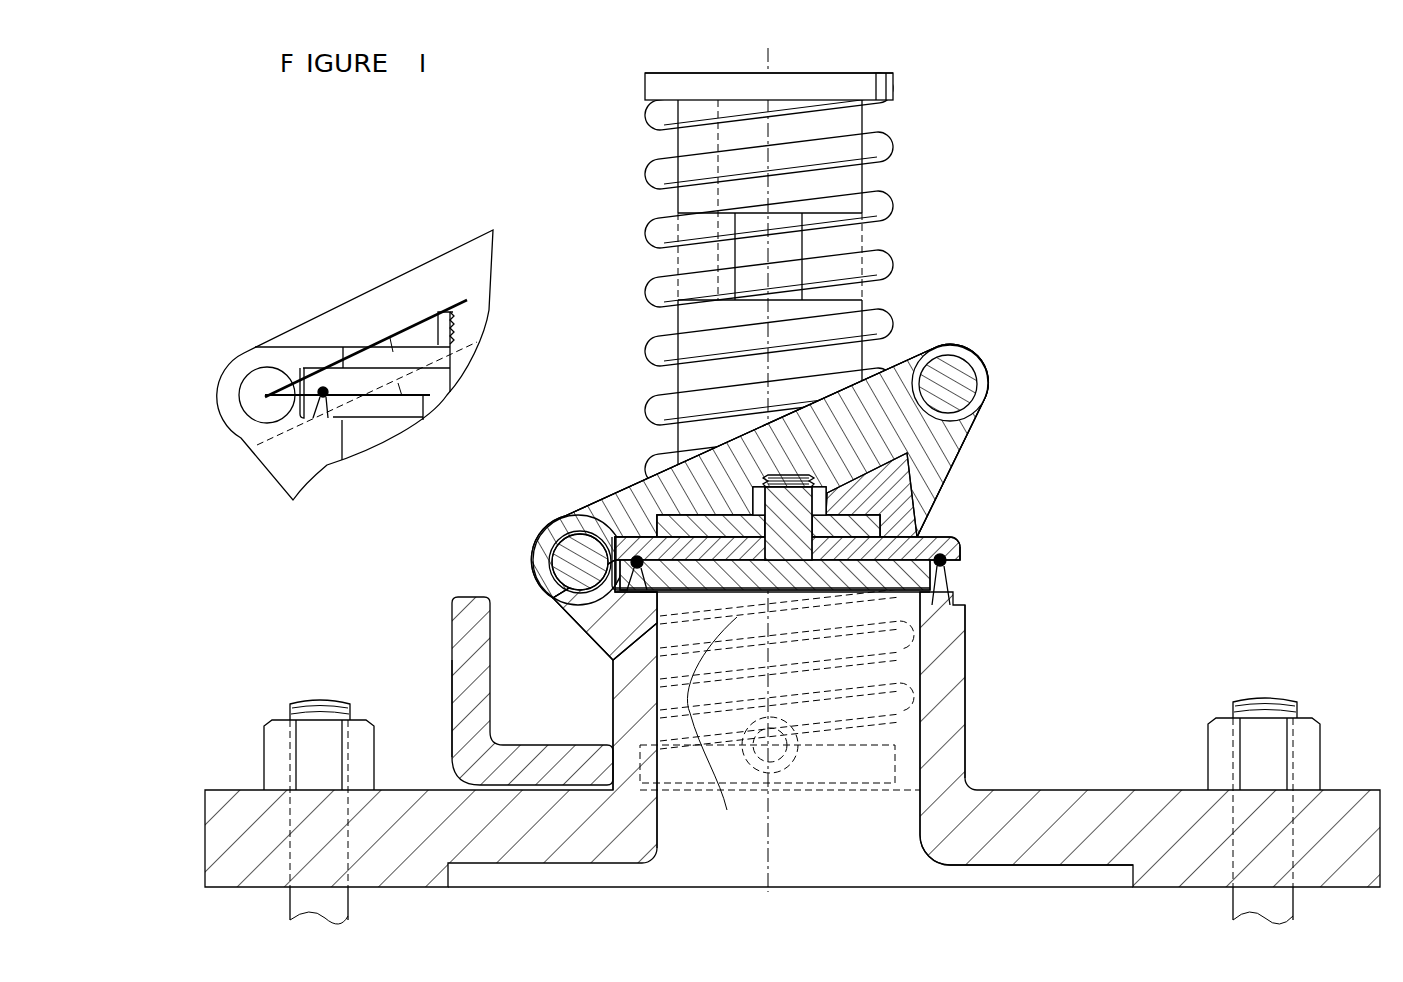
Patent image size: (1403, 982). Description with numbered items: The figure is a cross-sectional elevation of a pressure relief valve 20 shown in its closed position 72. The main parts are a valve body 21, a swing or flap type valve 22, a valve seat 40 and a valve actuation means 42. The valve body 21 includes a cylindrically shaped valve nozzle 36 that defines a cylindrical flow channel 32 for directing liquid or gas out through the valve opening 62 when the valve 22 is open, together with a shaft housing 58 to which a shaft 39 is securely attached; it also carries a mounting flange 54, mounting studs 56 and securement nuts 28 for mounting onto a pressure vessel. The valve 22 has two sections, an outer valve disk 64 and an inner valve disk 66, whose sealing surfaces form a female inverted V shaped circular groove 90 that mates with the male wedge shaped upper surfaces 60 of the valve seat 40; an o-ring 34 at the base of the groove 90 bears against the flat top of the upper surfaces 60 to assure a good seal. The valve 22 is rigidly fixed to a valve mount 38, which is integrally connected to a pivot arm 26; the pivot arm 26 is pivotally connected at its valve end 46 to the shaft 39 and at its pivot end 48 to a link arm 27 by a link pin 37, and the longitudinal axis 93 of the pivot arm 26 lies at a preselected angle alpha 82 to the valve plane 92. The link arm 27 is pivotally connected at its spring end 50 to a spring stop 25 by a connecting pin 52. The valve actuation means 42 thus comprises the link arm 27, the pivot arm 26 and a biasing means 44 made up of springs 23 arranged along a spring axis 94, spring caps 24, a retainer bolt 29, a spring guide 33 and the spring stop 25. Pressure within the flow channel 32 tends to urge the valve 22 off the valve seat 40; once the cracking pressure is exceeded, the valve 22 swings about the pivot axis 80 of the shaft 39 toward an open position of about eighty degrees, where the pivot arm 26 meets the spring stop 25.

The pressure relief valve 20 is at (1050, 128).
The valve body 21 is at (1020, 833).
The valve 22 is at (785, 488).
The springs 23 is at (640, 180).
The spring caps 24 is at (645, 88).
The spring stop 25 is at (487, 598).
The pivot arm 26 is at (648, 470).
The link arm 27 is at (968, 470).
The securement nuts 28 is at (450, 705).
The retainer bolt 29 is at (712, 158).
The flow channel 32 is at (905, 855).
The spring guide 33 is at (945, 308).
The o-ring 34 is at (958, 578).
The valve nozzle 36 is at (943, 738).
The link pin 37 is at (992, 432).
The valve mount 38 is at (660, 512).
The shaft 39 is at (586, 555).
The valve seat 40 is at (965, 640).
The valve actuation means 42 is at (1074, 281).
The biasing means 44 is at (518, 176).
The valve end 46 is at (550, 533).
The pivot end 48 is at (990, 368).
The spring end 50 is at (687, 777).
The connecting pin 52 is at (773, 800).
The mounting flange 54 is at (1163, 850).
The mounting studs 56 is at (1262, 838).
The shaft housing 58 is at (560, 575).
The upper surfaces 60 is at (945, 598).
The valve opening 62 is at (705, 745).
The outer valve disk 64 is at (945, 556).
The inner valve disk 66 is at (938, 532).
The closed position 72 is at (1088, 557).
The pivot axis 80 is at (245, 440).
The angle alpha 82 is at (347, 322).
The groove 90 is at (577, 637).
The valve plane 92 is at (425, 423).
The longitudinal axis 93 is at (450, 300).
The spring axis 94 is at (772, 66).